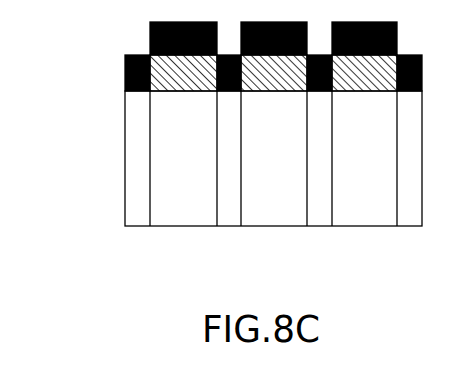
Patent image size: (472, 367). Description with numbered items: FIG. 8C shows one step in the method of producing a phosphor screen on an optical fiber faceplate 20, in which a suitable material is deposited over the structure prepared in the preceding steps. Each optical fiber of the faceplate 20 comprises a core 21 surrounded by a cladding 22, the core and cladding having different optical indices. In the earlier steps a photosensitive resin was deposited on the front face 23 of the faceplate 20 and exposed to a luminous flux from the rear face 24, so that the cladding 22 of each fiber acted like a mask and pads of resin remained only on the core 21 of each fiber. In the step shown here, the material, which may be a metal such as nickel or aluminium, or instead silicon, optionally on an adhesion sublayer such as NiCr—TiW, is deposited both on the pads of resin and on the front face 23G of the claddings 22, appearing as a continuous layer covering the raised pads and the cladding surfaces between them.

The optical fiber faceplate 20 is at (106, 200).
The core 21 is at (183, 215).
The cladding 22 is at (135, 215).
The front face 23 is at (188, 92).
The front face of the claddings 23G is at (125, 91).
The rear face 24 is at (267, 226).